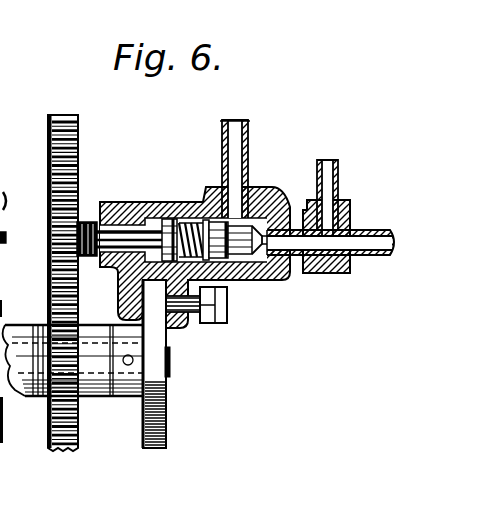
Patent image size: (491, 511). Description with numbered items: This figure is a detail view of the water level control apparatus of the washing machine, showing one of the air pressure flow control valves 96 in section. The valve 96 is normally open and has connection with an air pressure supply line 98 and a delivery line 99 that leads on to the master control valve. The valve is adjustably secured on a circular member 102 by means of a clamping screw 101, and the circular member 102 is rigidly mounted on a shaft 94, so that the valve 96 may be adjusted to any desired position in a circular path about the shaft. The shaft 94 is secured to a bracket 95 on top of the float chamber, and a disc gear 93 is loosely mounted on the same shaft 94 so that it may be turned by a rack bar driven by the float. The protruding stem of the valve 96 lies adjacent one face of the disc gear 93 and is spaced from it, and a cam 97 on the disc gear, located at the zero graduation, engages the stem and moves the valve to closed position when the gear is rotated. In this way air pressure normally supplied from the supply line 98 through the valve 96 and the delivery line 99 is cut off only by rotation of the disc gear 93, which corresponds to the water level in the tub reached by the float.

The disc gear 93 is at (67, 162).
The shaft 94 is at (170, 363).
The bracket 95 is at (20, 325).
The air pressure flow control valve 96 is at (160, 202).
The cam 97 is at (84, 222).
The air pressure supply line 98 is at (367, 228).
The delivery line 99 is at (248, 137).
The clamping screw 101 is at (228, 305).
The circular member 102 is at (167, 418).